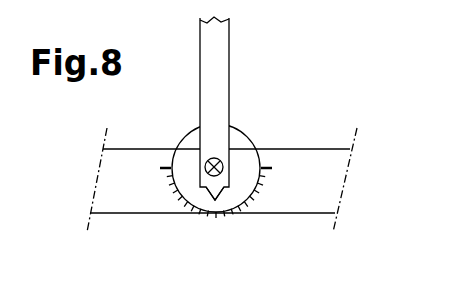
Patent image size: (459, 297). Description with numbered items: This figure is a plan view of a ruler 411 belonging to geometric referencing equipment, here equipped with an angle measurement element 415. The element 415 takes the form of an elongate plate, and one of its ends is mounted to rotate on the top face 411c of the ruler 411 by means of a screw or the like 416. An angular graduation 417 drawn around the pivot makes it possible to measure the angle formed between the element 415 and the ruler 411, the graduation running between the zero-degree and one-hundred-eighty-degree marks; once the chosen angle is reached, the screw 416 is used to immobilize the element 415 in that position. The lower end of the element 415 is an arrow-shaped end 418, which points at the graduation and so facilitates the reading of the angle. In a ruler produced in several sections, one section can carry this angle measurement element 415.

The ruler 411 is at (110, 200).
The top face of the ruler 411c is at (291, 205).
The angle measurement element 415 is at (217, 48).
The screw 416 is at (215, 157).
The angular scale 417 is at (177, 197).
The arrow-shaped end 418 is at (218, 199).